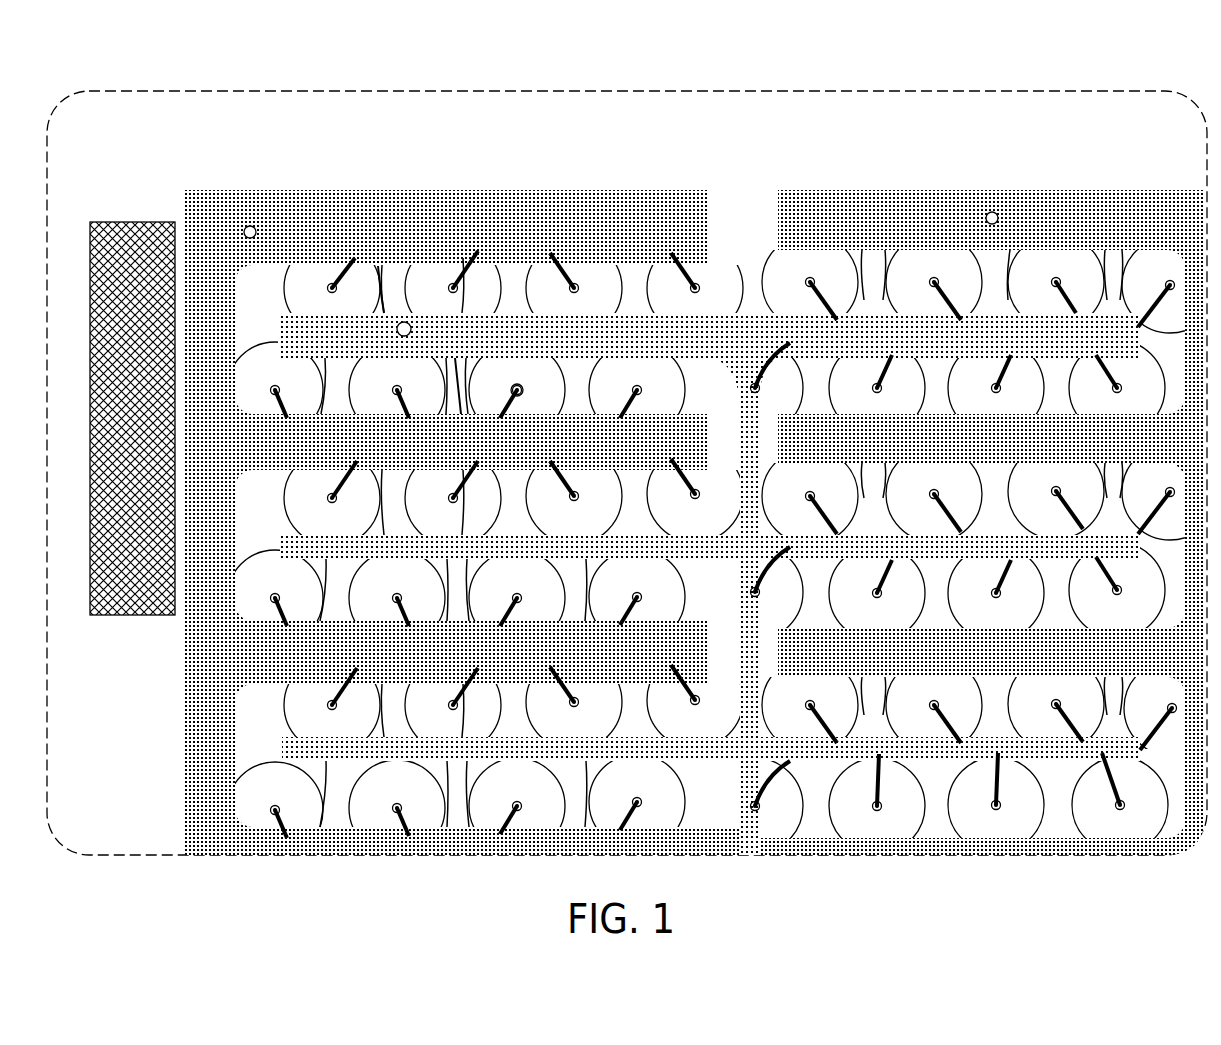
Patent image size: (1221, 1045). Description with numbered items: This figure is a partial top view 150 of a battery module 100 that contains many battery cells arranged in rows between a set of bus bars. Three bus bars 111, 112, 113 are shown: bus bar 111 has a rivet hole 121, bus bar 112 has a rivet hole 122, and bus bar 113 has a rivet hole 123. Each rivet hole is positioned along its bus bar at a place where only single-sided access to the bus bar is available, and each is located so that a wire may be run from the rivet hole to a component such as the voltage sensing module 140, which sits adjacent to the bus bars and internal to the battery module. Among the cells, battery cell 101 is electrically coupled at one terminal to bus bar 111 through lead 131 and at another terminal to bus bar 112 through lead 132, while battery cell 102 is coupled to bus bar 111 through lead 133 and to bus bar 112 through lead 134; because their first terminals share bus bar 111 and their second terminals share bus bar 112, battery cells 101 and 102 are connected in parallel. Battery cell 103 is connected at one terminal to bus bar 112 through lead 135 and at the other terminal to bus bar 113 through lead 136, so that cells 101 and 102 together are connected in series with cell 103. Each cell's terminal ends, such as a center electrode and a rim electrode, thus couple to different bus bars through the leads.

The battery module 100 is at (647, 151).
The battery cell 101 is at (321, 300).
The battery cell 102 is at (558, 387).
The battery cell 103 is at (1050, 304).
The bus bar 111 is at (561, 244).
The bus bar 112 is at (758, 346).
The bus bar 113 is at (906, 229).
The rivet hole 121 is at (251, 226).
The rivet hole 122 is at (411, 330).
The rivet hole 123 is at (994, 212).
The lead 131 is at (346, 270).
The lead 132 is at (384, 283).
The lead 133 is at (520, 402).
The lead 134 is at (458, 392).
The lead 135 is at (1060, 307).
The lead 136 is at (1018, 243).
The voltage sensing module 140 is at (131, 222).
The partial top view 150 is at (976, 90).